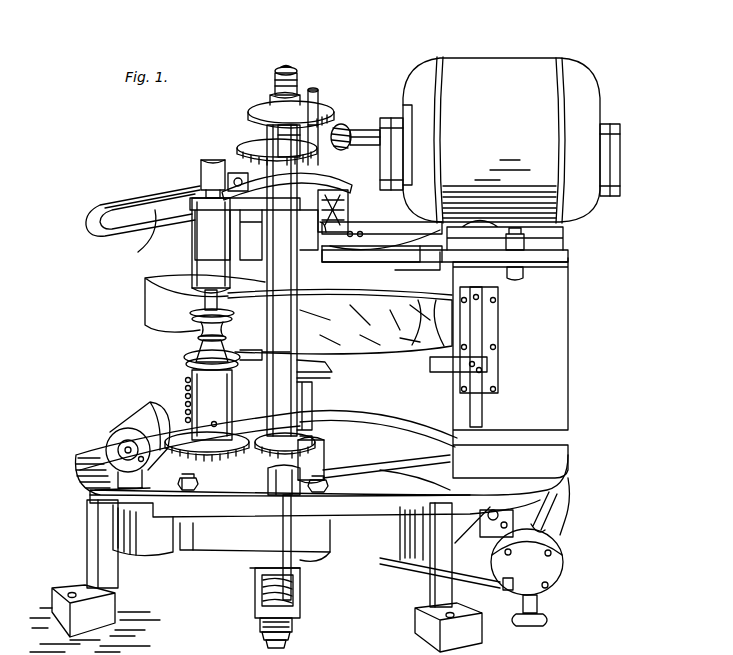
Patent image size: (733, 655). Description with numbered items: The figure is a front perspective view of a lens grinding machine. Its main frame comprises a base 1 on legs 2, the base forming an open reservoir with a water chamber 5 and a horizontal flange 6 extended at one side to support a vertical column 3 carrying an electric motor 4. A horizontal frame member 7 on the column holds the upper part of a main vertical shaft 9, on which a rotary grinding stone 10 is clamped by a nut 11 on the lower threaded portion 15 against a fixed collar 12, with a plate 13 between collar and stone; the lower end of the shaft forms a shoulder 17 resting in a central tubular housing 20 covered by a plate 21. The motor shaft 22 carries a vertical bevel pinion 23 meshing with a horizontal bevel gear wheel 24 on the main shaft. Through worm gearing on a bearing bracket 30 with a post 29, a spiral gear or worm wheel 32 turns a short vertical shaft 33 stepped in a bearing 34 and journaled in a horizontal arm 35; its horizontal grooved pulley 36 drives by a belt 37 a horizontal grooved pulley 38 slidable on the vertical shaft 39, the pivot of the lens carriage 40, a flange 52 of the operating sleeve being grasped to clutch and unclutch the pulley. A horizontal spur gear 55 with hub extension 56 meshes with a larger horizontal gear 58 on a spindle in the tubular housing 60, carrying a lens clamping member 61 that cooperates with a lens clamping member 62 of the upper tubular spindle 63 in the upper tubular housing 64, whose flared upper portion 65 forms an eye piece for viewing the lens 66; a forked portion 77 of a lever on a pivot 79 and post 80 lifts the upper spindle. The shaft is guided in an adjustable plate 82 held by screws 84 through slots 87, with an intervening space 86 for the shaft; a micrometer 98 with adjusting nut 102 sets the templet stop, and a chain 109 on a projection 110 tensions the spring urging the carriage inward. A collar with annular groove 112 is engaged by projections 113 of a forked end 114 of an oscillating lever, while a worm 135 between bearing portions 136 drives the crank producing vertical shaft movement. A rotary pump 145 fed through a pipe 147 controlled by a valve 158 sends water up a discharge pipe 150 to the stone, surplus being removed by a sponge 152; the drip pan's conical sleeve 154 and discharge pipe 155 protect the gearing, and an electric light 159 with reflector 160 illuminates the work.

The base 1 is at (157, 540).
The legs 2 is at (87, 536).
The vertical column 3 is at (546, 363).
The electric motor 4 is at (495, 75).
The water chamber 5 is at (390, 432).
The horizontal flange 6 is at (560, 498).
The horizontal frame member 7 is at (420, 250).
The main vertical shaft 9 is at (276, 131).
The rotary grinding stone 10 is at (150, 312).
The nut 11 is at (313, 362).
The fixed collar 12 is at (290, 288).
The plate 13 is at (305, 296).
The lower threaded portion 15 is at (316, 402).
The shoulder 17 is at (322, 446).
The central tubular housing 20 is at (330, 472).
The plate 21 is at (296, 505).
The motor shaft 22 is at (368, 132).
The vertical bevel pinion 23 is at (343, 122).
The horizontal bevel gear wheel 24 is at (236, 150).
The post 29 is at (338, 227).
The bearing bracket 30 is at (364, 238).
The spiral gear or worm wheel 32 is at (330, 210).
The short vertical shaft 33 is at (314, 88).
The bearing 34 is at (303, 233).
The horizontal arm 35 is at (315, 186).
The horizontal grooved pulley 36 is at (334, 125).
The belt 37 is at (248, 117).
The horizontal grooved pulley 38 is at (266, 101).
The vertical shaft 39 is at (282, 70).
The lens carriage 40 is at (194, 254).
The flange 52 is at (290, 72).
The horizontal spur gear 55 is at (270, 440).
The hub extension 56 is at (266, 458).
The horizontal gear 58 is at (208, 450).
The tubular housing 60 is at (196, 396).
The lens clamping member 61 is at (225, 326).
The lens clamping member 62 is at (222, 314).
The upper tubular spindle 63 is at (203, 305).
The upper tubular housing 64 is at (190, 260).
The flared upper portion 65 is at (198, 166).
The lens 66 is at (200, 332).
The forked portion 77 is at (228, 183).
The pivot 79 is at (240, 180).
The post 80 is at (252, 190).
The adjustable plate 82 is at (244, 506).
The screws 84 is at (379, 488).
The intervening space 86 is at (226, 542).
The slots 87 is at (197, 486).
The micrometer 98 is at (140, 414).
The adjusting nut 102 is at (110, 432).
The chain 109 is at (186, 380).
The projection 110 is at (190, 362).
The annular groove 112 is at (276, 644).
The projections 113 is at (262, 634).
The forked end 114 is at (258, 622).
The worm 135 is at (262, 592).
The bearing portions 136 is at (258, 572).
The rotary pump 145 is at (553, 572).
The pipe 147 is at (410, 584).
The discharge pipe 150 is at (566, 518).
The sponge 152 is at (436, 344).
The conical sleeve 154 is at (203, 334).
The discharge pipe 155 is at (320, 378).
The valve 158 is at (543, 604).
The electric light 159 is at (145, 242).
The reflector 160 is at (90, 222).